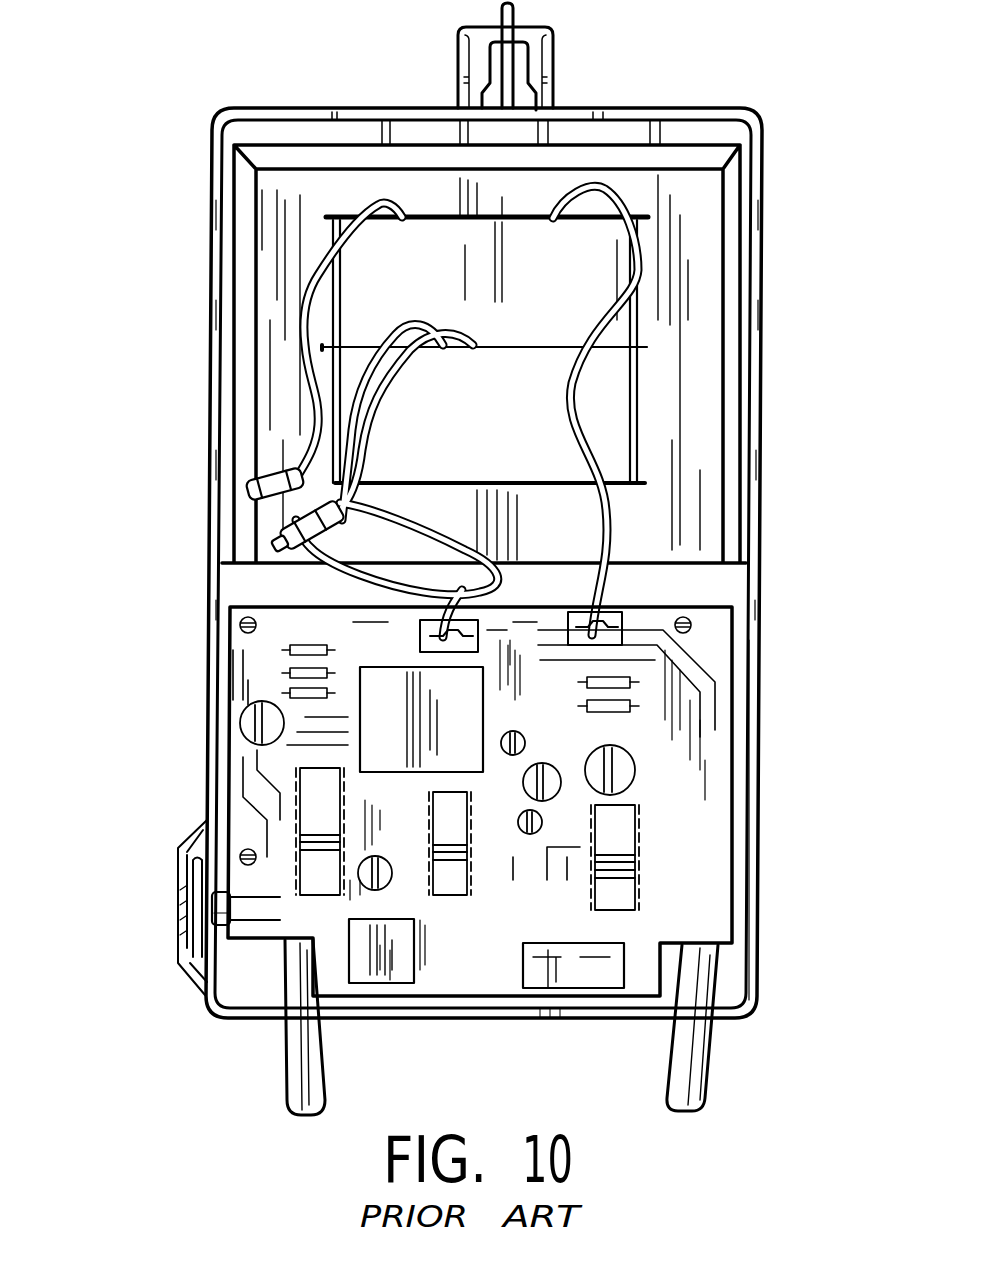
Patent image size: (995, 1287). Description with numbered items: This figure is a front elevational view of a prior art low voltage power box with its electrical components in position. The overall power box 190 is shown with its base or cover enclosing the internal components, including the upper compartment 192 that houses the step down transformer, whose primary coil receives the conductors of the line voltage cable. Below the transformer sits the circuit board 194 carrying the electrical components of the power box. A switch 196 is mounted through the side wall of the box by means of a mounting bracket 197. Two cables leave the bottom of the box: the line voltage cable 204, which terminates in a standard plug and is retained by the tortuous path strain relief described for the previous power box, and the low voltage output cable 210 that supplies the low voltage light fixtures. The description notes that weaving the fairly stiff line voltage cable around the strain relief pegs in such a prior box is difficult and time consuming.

The controller housing 190 is at (205, 378).
The transformer compartment frame 192 is at (698, 285).
The printed circuit board 194 is at (708, 762).
The switch 196 is at (213, 910).
The switch mounting bracket 197 is at (178, 892).
The power cord 204 is at (713, 1073).
The output cable 210 is at (290, 1090).